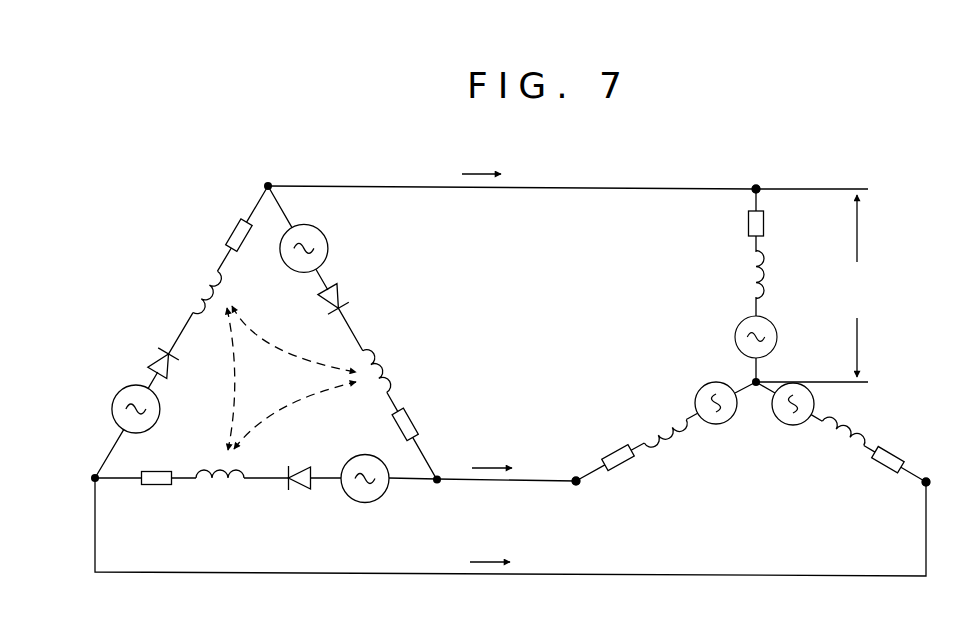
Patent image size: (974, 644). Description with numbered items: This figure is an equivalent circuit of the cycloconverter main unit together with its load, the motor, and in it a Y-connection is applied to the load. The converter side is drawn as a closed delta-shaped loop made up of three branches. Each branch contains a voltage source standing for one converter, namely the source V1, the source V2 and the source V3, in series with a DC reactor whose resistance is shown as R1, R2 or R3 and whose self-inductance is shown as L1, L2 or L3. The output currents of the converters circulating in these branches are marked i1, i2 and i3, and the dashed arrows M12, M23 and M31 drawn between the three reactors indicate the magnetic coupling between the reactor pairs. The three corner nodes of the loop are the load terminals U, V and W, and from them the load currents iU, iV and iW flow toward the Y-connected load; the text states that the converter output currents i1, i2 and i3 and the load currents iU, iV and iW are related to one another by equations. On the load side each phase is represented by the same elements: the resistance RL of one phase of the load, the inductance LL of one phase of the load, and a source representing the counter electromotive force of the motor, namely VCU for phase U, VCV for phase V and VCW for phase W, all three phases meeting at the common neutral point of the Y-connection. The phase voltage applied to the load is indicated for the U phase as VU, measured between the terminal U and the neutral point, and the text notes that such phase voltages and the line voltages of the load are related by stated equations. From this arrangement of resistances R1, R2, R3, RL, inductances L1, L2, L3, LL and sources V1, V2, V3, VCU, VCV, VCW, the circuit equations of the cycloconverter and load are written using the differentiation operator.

The DC reactor resistance R1 is at (228, 235).
The DC reactor self-inductance L1 is at (198, 293).
The converter output current i1 is at (160, 333).
The converter voltage source V1 is at (117, 383).
The converter voltage source V3 is at (327, 220).
The converter output current i3 is at (347, 280).
The DC reactor self-inductance L3 is at (387, 370).
The DC reactor resistance R3 is at (417, 423).
The DC reactor resistance R2 is at (157, 493).
The DC reactor self-inductance L2 is at (220, 492).
The converter output current i2 is at (316, 505).
The converter voltage source V2 is at (383, 515).
The load current iU is at (492, 175).
The load current iW is at (492, 456).
The load current iV is at (490, 551).
The load phase terminal U is at (761, 179).
The load phase terminal W is at (575, 494).
The load phase terminal V is at (934, 496).
The load phase resistance RL is at (772, 225).
The load phase inductance LL is at (774, 275).
The counter electromotive force VCU is at (785, 322).
The load phase voltage VU is at (853, 286).
The counter electromotive force VCW is at (713, 374).
The counter electromotive force VCV is at (792, 439).
The mutual inductance M31 is at (294, 339).
The mutual inductance M12 is at (242, 379).
The mutual inductance M23 is at (295, 415).